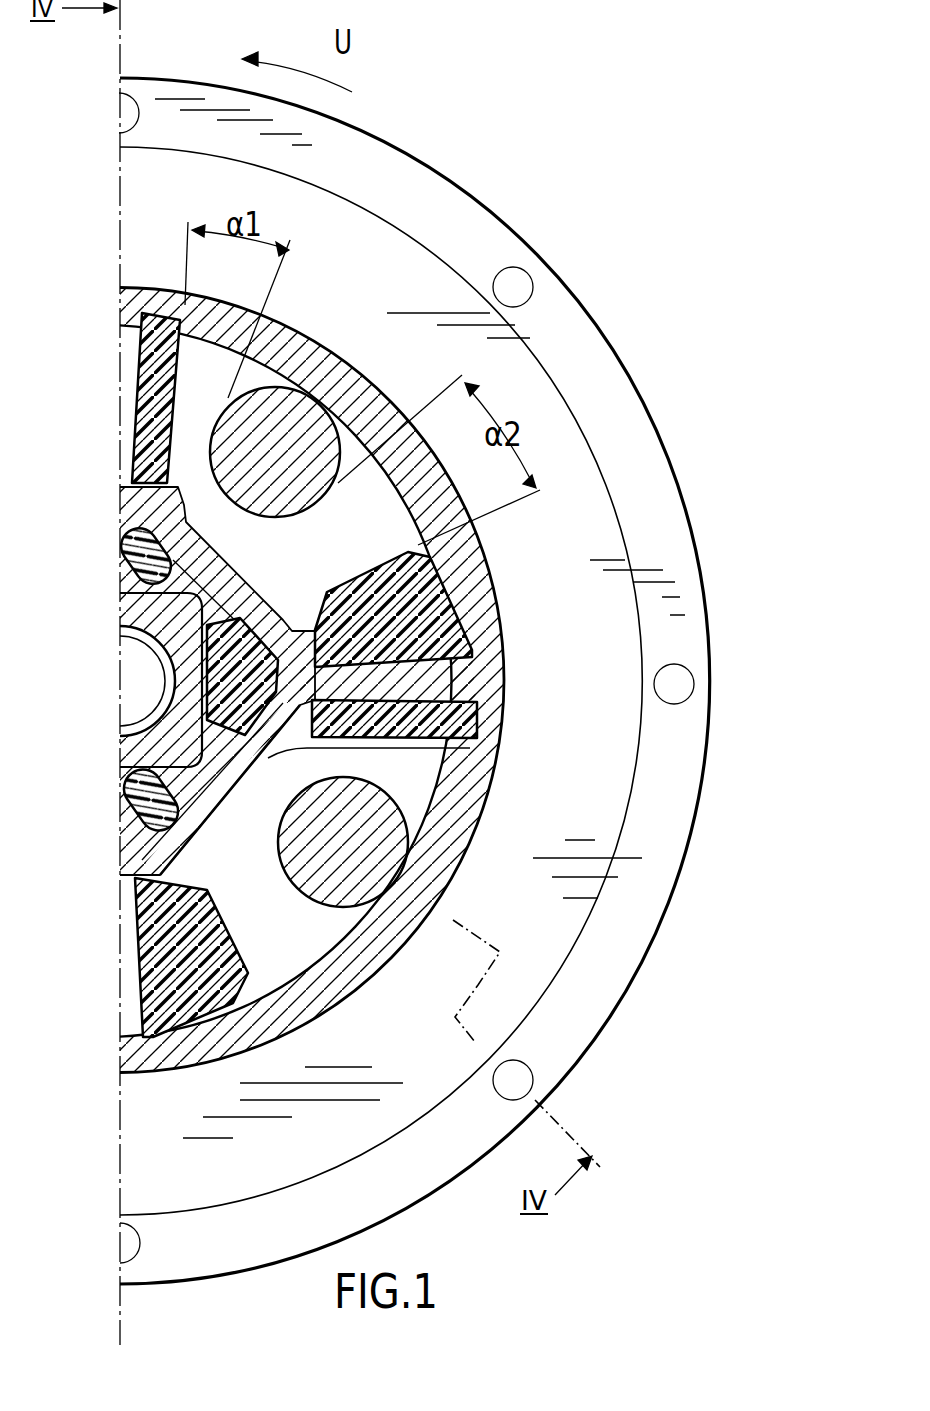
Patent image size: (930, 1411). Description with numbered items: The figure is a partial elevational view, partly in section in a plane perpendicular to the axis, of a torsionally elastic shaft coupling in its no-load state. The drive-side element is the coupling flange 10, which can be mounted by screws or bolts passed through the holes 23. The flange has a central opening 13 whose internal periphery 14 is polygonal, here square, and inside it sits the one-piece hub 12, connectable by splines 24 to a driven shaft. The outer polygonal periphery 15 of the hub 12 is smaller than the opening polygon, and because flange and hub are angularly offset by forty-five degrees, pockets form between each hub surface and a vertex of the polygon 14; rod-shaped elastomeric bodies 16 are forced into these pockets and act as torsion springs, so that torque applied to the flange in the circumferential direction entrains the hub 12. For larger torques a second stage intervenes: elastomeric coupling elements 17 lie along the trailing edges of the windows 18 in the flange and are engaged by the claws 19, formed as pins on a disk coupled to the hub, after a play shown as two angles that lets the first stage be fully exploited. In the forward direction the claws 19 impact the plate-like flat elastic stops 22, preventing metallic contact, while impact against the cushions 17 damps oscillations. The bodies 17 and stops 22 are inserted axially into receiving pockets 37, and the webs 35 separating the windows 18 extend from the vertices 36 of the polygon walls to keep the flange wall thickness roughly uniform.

The coupling flange 10 is at (400, 165).
The hub 12 is at (150, 745).
The central opening 13 is at (213, 613).
The polygonal internal periphery 14 is at (210, 762).
The polygonal periphery of the hub 15 is at (180, 588).
The elastomeric bodies 16 is at (132, 558).
The elastomeric coupling elements 17 is at (430, 612).
The windows 18 is at (402, 522).
The claws 19 is at (300, 415).
The elastic stops 22 is at (160, 315).
The holes 23 is at (528, 290).
The splines 24 is at (128, 648).
The webs 35 is at (430, 680).
The vertices 36 is at (288, 695).
The receiving pockets 37 is at (137, 437).